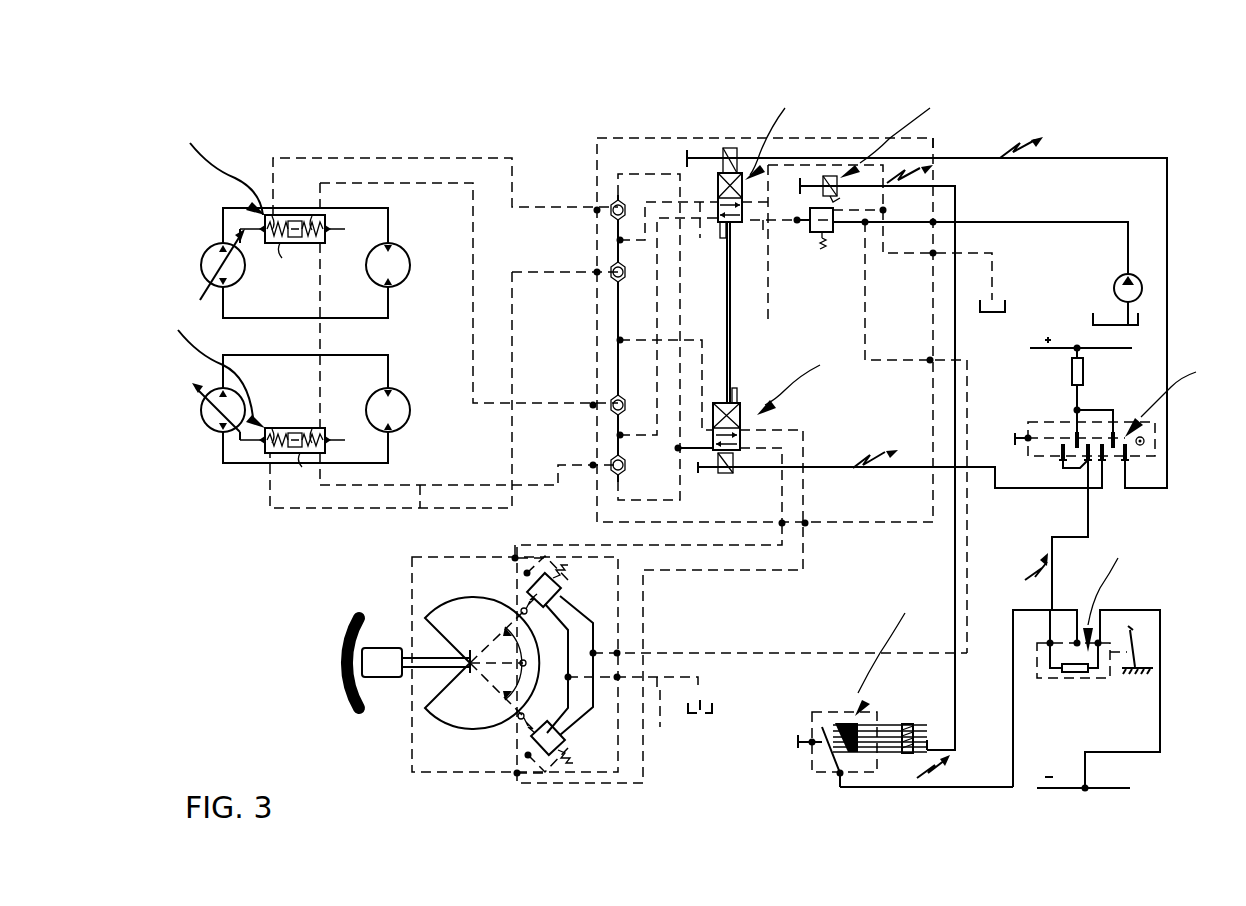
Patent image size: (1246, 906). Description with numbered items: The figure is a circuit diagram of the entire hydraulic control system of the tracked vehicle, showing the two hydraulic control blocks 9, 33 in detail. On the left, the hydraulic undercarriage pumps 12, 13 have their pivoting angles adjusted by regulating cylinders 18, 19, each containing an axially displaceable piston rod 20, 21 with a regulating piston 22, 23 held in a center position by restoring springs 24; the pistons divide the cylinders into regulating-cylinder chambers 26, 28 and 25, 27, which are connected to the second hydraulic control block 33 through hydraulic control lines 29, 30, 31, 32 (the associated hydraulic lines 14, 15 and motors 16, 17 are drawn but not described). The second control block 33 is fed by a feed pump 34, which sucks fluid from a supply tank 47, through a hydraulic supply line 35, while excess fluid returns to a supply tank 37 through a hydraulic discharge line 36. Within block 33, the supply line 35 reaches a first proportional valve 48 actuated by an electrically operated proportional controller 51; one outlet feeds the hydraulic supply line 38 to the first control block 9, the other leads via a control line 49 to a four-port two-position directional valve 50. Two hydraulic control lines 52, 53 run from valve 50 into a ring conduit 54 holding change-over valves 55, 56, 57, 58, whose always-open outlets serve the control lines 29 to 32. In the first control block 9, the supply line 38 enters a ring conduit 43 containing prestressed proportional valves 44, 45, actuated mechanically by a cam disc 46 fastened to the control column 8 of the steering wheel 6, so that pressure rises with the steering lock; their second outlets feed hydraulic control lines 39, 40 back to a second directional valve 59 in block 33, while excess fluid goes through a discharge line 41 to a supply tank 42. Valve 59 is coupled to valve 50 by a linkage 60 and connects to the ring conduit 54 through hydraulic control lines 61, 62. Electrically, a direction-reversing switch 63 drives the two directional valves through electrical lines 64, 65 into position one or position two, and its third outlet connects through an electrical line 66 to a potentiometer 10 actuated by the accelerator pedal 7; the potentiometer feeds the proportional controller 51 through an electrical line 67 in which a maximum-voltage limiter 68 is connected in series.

The steering wheel 6 is at (362, 720).
The accelerator pedal 7 is at (1136, 655).
The control column 8 is at (430, 658).
The hydraulic control block 9 is at (445, 773).
The potentiometer 10 is at (1118, 558).
The hydraulic undercarriage pump 12 is at (201, 267).
The hydraulic undercarriage pump 13 is at (214, 430).
The hydraulic lines 14 is at (357, 208).
The hydraulic lines 15 is at (352, 355).
The hydraulic motor 16 is at (388, 243).
The hydraulic motor 17 is at (388, 388).
The regulating cylinder 18 is at (216, 166).
The regulating cylinder 19 is at (210, 367).
The piston rod 20 is at (240, 229).
The piston rod 21 is at (262, 463).
The regulating piston 22 is at (296, 215).
The regulating piston 23 is at (291, 428).
The restoring springs 24 is at (302, 250).
The regulating-cylinder chamber 25 is at (270, 428).
The regulating-cylinder chamber 26 is at (272, 215).
The regulating-cylinder chamber 27 is at (312, 428).
The regulating-cylinder chamber 28 is at (305, 215).
The hydraulic control line 29 is at (468, 158).
The hydraulic control line 30 is at (473, 252).
The hydraulic control line 31 is at (452, 485).
The hydraulic control line 32 is at (420, 485).
The second hydraulic control block 33 is at (938, 143).
The feed pump 34 is at (1143, 298).
The hydraulic supply line 35 is at (972, 222).
The hydraulic discharge line 36 is at (806, 165).
The supply tank 37 is at (1007, 305).
The hydraulic supply line 38 is at (665, 552).
The hydraulic control line 39 is at (780, 431).
The hydraulic control line 40 is at (804, 428).
The discharge line 41 is at (660, 680).
The supply tank 42 is at (710, 715).
The ring conduit 43 is at (582, 620).
The proportional valve 44 is at (527, 583).
The proportional valve 45 is at (560, 750).
The cam disc 46 is at (482, 695).
The supply tank 47 is at (1093, 318).
The first proportional valve 48 is at (815, 240).
The control line 49 is at (764, 230).
The 4/2-way valve 50 is at (778, 132).
The proportional controller 51 is at (877, 419).
The hydraulic control line 52 is at (699, 202).
The hydraulic control line 53 is at (700, 236).
The ring conduit 54 is at (660, 175).
The change-over valve 55 is at (611, 199).
The change-over valve 56 is at (612, 272).
The change-over valve 57 is at (610, 398).
The change-over valve 58 is at (610, 462).
The 4/2-way valve 59 is at (779, 408).
The linkage 60 is at (730, 360).
The hydraulic control line 61 is at (681, 330).
The hydraulic control line 62 is at (687, 453).
The direction-reversing switch 63 is at (1174, 402).
The electrical line 64 is at (1161, 438).
The electrical line 65 is at (1003, 490).
The electrical line 66 is at (1088, 517).
The electrical line 67 is at (1013, 737).
The maximum-voltage limiter 68 is at (874, 689).